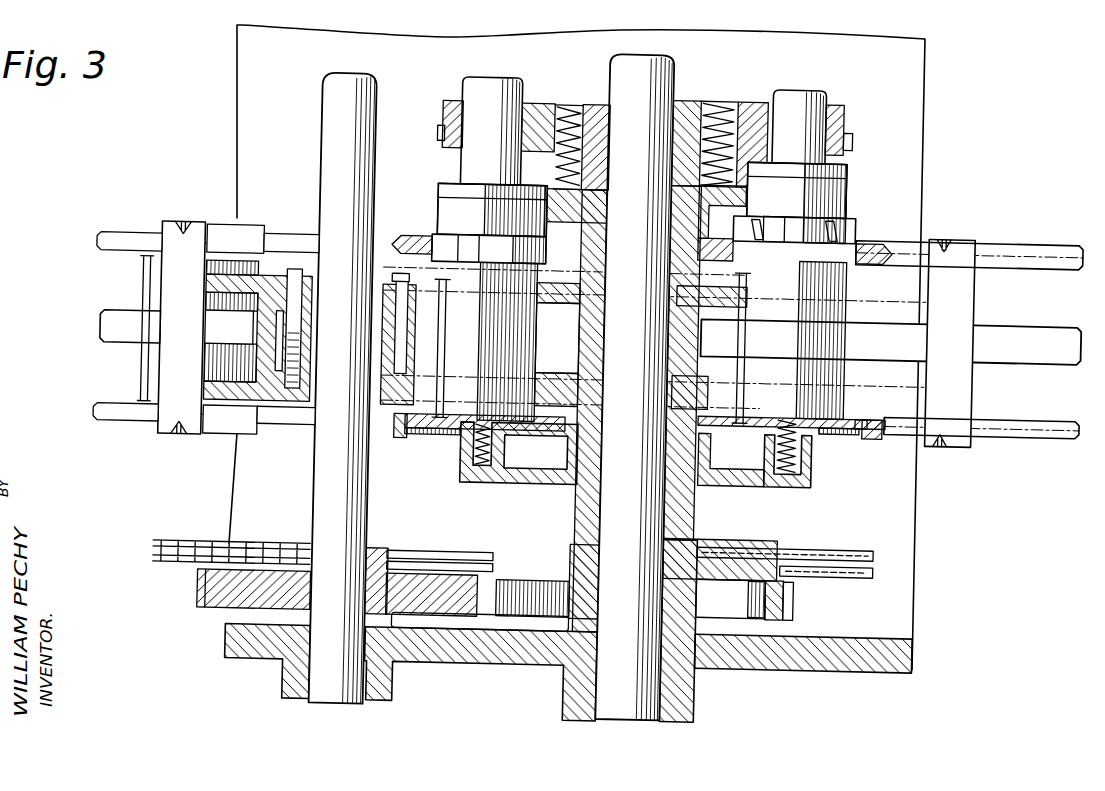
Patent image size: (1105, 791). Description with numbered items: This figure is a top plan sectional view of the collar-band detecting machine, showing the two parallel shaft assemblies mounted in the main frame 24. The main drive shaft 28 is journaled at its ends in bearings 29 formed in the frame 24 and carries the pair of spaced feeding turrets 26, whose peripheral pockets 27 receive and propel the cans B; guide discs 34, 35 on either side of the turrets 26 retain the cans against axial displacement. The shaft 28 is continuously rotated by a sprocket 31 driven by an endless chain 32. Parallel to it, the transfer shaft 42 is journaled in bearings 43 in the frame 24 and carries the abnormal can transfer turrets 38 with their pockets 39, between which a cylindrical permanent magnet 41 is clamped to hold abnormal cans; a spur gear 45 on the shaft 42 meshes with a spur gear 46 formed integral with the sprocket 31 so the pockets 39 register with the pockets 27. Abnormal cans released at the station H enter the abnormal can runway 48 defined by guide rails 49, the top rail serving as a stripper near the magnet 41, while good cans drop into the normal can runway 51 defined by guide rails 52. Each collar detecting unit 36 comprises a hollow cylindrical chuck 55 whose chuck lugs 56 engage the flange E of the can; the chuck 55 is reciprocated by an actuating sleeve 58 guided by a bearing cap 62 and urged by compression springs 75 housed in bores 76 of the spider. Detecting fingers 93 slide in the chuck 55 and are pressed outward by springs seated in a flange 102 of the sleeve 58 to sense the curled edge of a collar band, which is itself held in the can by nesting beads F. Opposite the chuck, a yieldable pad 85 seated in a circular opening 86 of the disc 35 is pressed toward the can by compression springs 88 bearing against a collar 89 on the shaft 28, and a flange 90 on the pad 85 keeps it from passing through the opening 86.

The frame 24 is at (853, 648).
The feeding turrets 26 is at (713, 393).
The can receiving and propelling pockets 27 is at (545, 397).
The main drive shaft 28 is at (624, 704).
The bearings 29 is at (683, 695).
The sprocket 31 is at (826, 552).
The endless chain 32 is at (757, 548).
The guide disc 34 is at (864, 246).
The auxiliary guide disc 35 is at (880, 430).
The collar detecting unit 36 is at (430, 199).
The abnormal can transfer turrets 38 is at (204, 292).
The pockets 39 is at (437, 292).
The cylindrical permanent magnet 41 is at (262, 333).
The transfer shaft 42 is at (330, 487).
The bearings 43 is at (384, 683).
The spur gear 45 is at (218, 596).
The spur gear 46 is at (790, 597).
The abnormal can runway 48 is at (99, 353).
The guide rails 49 is at (118, 320).
The normal can runway 51 is at (976, 380).
The guide rails 52 is at (1055, 258).
The hollow cylindrical chuck 55 is at (448, 214).
The chuck lugs 56 is at (488, 245).
The actuating sleeve 58 is at (490, 100).
The bearing cap 62 is at (446, 106).
The compression springs 75 is at (563, 108).
The bores 76 is at (582, 130).
The yieldable pad 85 is at (525, 430).
The circular openings 86 is at (402, 432).
The compression springs 88 is at (483, 470).
The collar 89 is at (738, 468).
The flange 90 is at (407, 436).
The detecting fingers 93 is at (765, 226).
The flange 102 is at (455, 190).
The can B is at (131, 374).
The flange E is at (124, 273).
The beads F is at (455, 268).
The abnormal can release station H is at (460, 410).